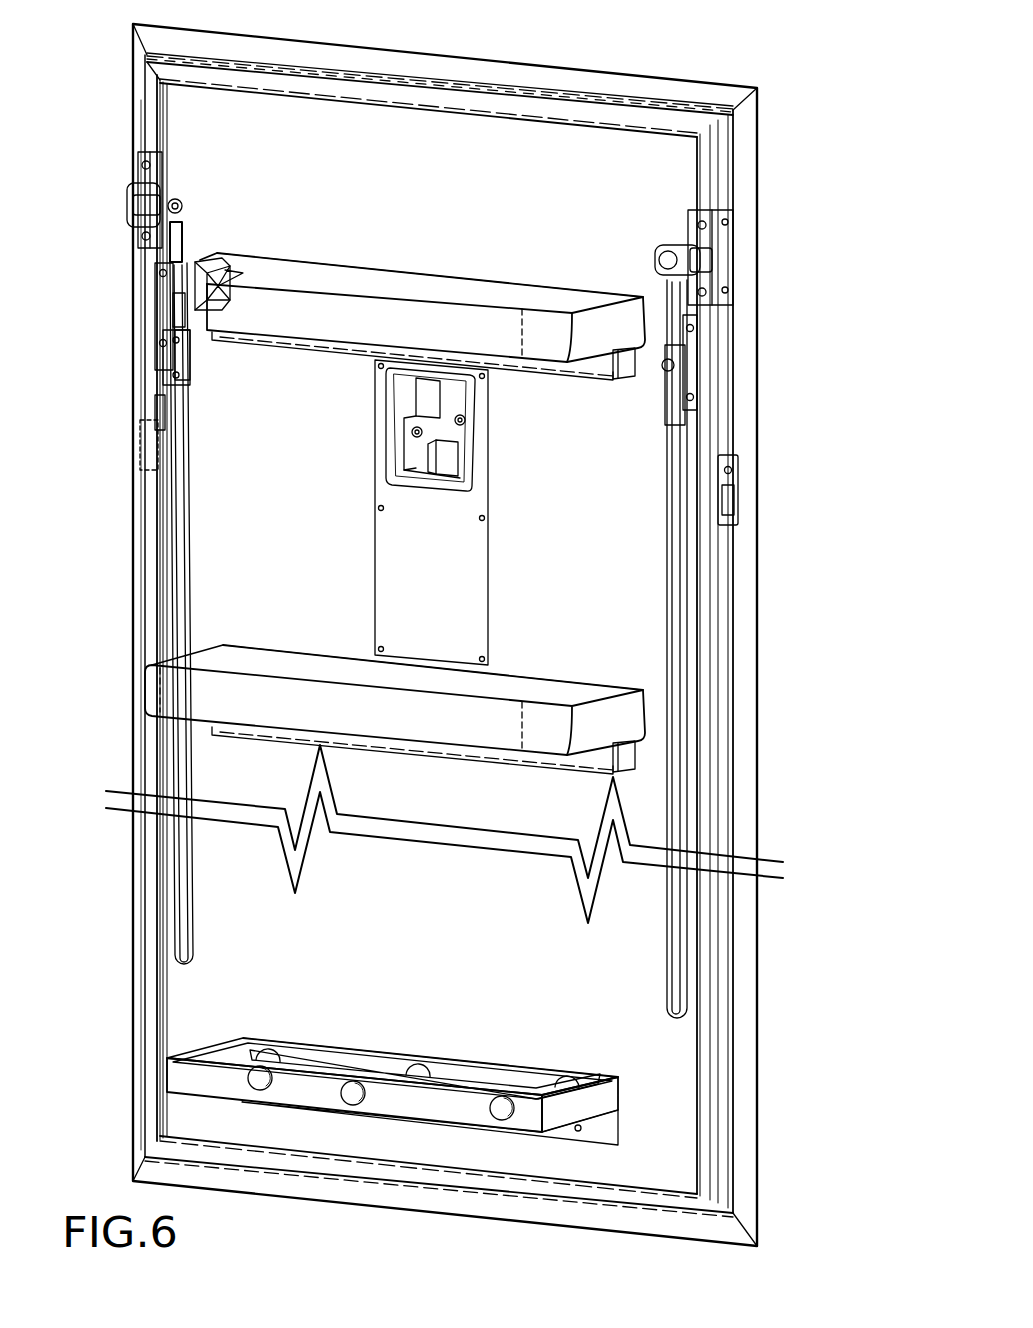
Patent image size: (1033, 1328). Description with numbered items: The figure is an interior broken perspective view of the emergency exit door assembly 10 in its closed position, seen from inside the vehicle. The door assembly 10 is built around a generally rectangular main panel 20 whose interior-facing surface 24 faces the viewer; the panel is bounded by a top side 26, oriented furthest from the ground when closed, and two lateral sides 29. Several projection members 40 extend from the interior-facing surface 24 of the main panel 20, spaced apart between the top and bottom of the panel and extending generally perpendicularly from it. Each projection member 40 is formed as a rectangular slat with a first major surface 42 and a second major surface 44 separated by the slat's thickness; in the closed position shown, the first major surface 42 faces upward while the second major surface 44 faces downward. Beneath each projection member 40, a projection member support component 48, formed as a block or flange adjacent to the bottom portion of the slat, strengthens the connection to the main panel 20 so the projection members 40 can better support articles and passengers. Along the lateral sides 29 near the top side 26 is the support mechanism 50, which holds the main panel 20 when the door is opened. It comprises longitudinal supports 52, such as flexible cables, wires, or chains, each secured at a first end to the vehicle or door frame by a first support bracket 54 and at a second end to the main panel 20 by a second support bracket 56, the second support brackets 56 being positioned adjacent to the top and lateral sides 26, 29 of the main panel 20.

The door assembly 10 is at (96, 77).
The main panel 20 is at (214, 589).
The interior-facing surface 24 is at (230, 895).
The top side 26 is at (545, 155).
The lateral sides 29 is at (178, 118).
The projection members 40 is at (590, 290).
The first major surface 42 is at (510, 300).
The second major surface 44 is at (545, 365).
The projection member support component 48 is at (627, 368).
The support mechanism 50 is at (214, 221).
The longitudinal supports 52 is at (178, 932).
The first support bracket 54 is at (152, 172).
The second support bracket 56 is at (170, 337).